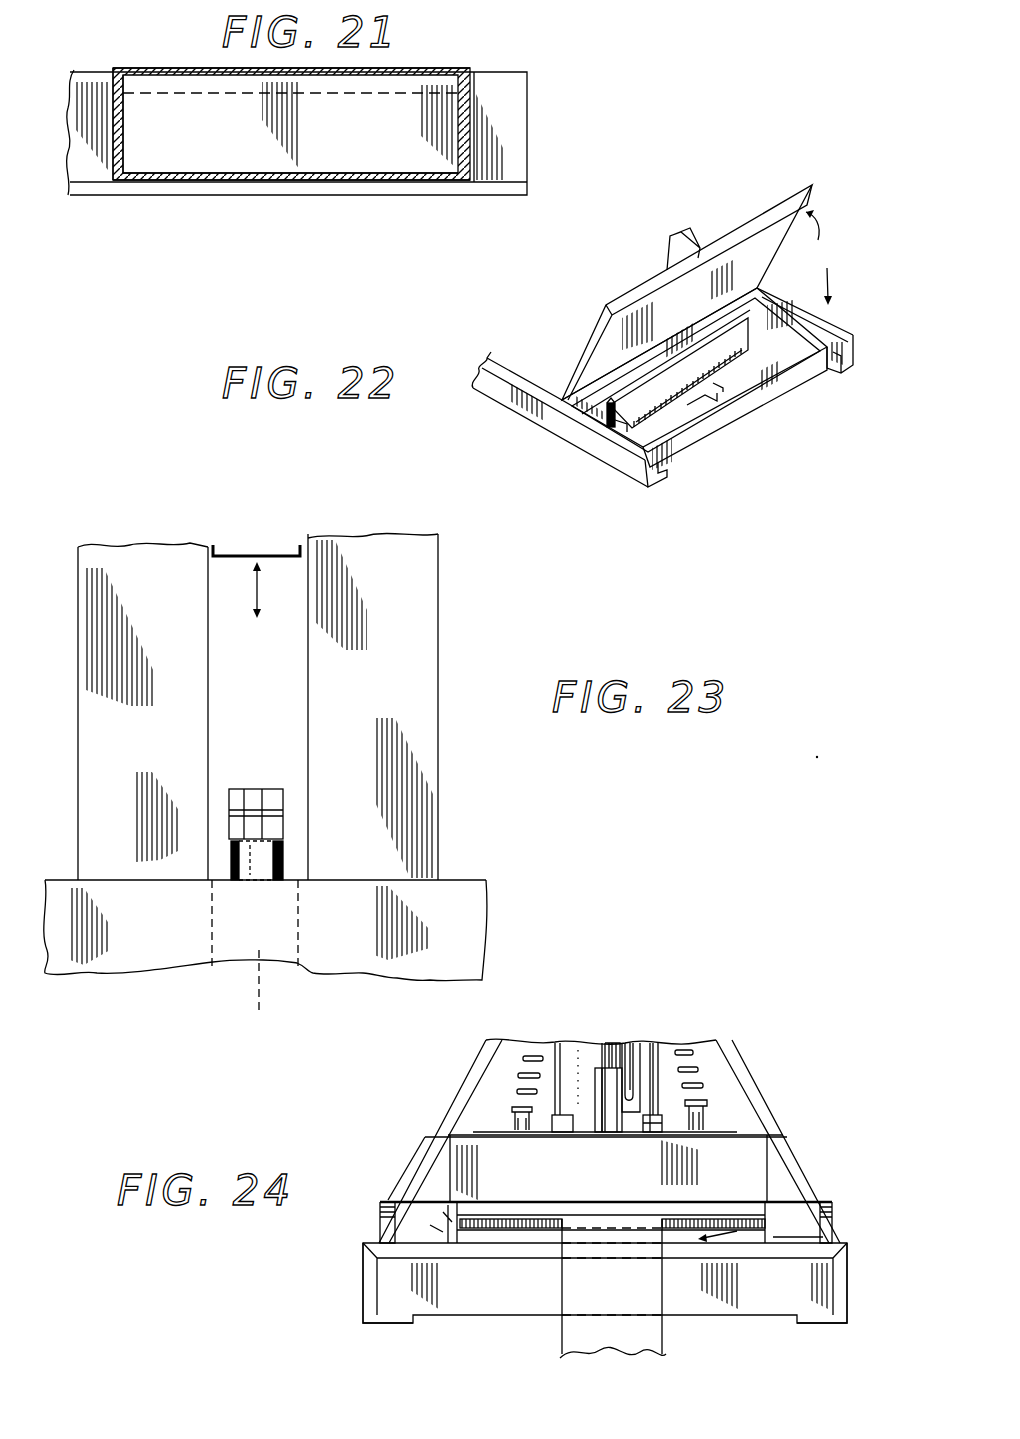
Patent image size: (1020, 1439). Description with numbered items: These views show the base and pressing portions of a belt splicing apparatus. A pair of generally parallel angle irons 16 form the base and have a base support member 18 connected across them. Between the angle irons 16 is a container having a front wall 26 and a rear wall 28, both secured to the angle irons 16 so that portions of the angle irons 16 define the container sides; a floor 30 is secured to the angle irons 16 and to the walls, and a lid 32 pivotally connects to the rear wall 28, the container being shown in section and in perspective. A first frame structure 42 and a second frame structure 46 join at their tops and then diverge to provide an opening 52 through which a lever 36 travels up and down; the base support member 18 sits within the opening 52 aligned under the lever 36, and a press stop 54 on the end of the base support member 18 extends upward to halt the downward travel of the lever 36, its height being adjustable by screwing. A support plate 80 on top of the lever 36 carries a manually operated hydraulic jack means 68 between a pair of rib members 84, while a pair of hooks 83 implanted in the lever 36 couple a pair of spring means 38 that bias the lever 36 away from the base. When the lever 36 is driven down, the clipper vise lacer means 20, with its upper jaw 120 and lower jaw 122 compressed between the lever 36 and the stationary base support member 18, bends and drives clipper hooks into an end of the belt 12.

In FIG. 24, the belt 12 is at (608, 1332).
In FIG. 21, the angle irons 16 is at (503, 137).
In FIG. 22, the angle irons 16 is at (852, 333).
In FIG. 23, the angle irons 16 is at (452, 942).
In FIG. 24, the angle irons 16 is at (367, 1325).
In FIG. 23, the base support member 18 is at (264, 994).
In FIG. 24, the clipper vise lacer means 20 is at (792, 1203).
In FIG. 21, the front wall 26 is at (462, 123).
In FIG. 22, the front wall 26 is at (753, 400).
In FIG. 24, the front wall 26 is at (748, 1293).
In FIG. 21, the rear wall 28 is at (118, 127).
In FIG. 22, the rear wall 28 is at (603, 392).
In FIG. 21, the floor 30 is at (327, 180).
In FIG. 22, the floor 30 is at (748, 323).
In FIG. 21, the lid 32 is at (380, 67).
In FIG. 22, the lid 32 is at (752, 266).
In FIG. 23, the lever 36 is at (272, 552).
In FIG. 24, the lever 36 is at (740, 1171).
In FIG. 24, the spring means 38 is at (532, 1058).
In FIG. 23, the first frame structure 42 is at (152, 726).
In FIG. 23, the second frame structure 46 is at (388, 682).
In FIG. 24, the second frame structure 46 is at (728, 1067).
In FIG. 23, the opening 52 is at (276, 757).
In FIG. 23, the press stop 54 is at (249, 823).
In FIG. 24, the press stop 54 is at (832, 1212).
In FIG. 24, the hydraulic jack means 68 is at (575, 1062).
In FIG. 24, the support plate 80 is at (737, 1135).
In FIG. 24, the hooks 83 is at (513, 1112).
In FIG. 24, the rib members 84 is at (653, 1132).
In FIG. 24, the upper jaw 120 is at (446, 1218).
In FIG. 24, the lower jaw 122 is at (478, 1237).